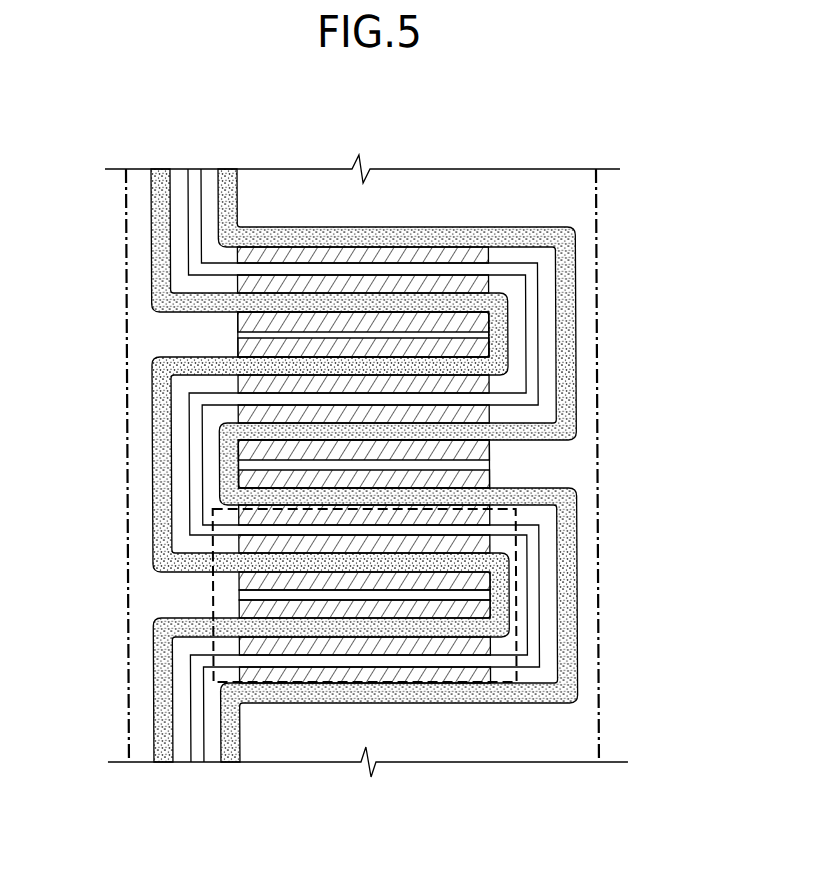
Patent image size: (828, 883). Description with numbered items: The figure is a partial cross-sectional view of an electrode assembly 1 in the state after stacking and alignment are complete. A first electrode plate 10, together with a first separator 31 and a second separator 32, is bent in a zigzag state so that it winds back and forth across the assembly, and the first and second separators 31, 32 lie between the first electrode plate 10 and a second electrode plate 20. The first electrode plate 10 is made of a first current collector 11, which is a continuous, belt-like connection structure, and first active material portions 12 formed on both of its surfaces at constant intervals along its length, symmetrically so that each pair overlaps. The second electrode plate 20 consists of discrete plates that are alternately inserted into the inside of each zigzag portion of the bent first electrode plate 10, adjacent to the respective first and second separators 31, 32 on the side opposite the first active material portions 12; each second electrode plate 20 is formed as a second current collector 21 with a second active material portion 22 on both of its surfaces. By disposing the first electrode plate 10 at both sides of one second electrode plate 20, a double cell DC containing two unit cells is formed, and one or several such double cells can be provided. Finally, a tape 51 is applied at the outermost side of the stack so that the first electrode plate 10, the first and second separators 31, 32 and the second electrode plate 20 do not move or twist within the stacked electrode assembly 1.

The electrode assembly 1 is at (403, 118).
The first electrode plate 10 is at (359, 522).
The first current collector 11 is at (409, 658).
The first active material portions 12 is at (469, 648).
The second electrode plate 20 is at (365, 593).
The second current collector 21 is at (340, 593).
The second active material portion 22 is at (310, 583).
The first separator 31 is at (158, 773).
The second separator 32 is at (232, 773).
The tape 51 is at (596, 641).
The double cell DC is at (211, 597).